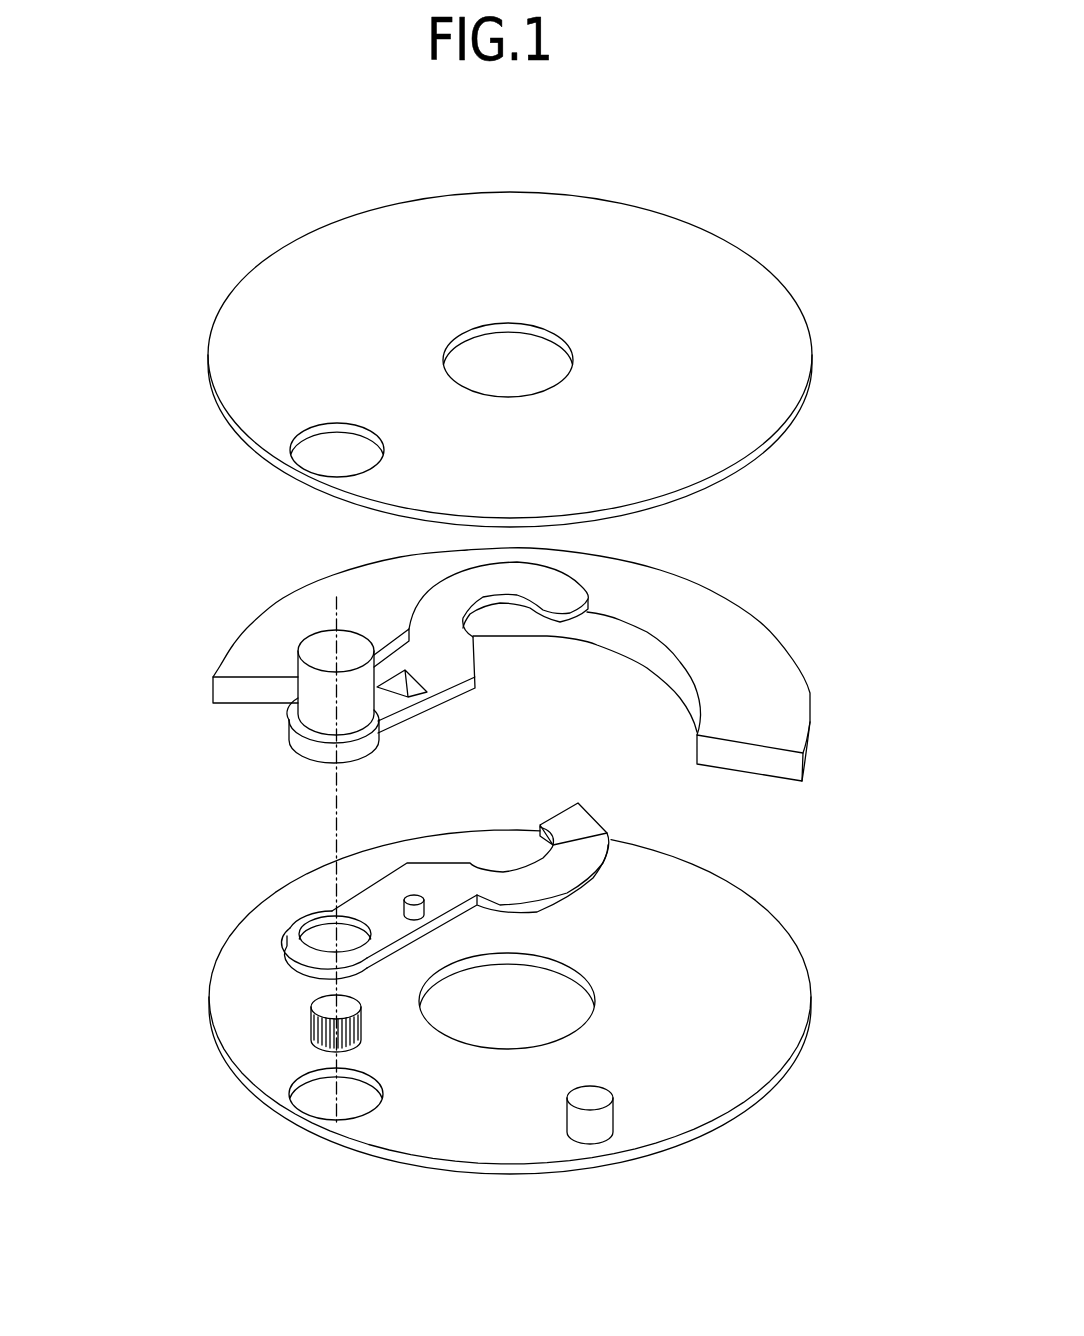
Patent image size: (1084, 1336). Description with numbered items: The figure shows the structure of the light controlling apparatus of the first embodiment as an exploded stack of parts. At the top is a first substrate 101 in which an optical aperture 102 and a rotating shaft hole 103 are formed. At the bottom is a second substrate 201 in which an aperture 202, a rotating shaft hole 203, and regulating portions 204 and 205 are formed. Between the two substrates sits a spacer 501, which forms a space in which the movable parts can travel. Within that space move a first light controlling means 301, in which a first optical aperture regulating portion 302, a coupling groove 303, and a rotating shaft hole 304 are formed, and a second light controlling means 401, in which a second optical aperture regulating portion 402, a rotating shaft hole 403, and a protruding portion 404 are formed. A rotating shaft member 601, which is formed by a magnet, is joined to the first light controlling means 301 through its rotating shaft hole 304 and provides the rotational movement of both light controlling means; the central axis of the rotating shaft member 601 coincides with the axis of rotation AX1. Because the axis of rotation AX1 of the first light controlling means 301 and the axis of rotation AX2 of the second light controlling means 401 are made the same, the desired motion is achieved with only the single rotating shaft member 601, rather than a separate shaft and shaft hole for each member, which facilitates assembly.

The first substrate 101 is at (748, 313).
The optical aperture 102 is at (565, 374).
The rotating shaft hole 103 is at (322, 472).
The second substrate 201 is at (715, 1055).
The aperture 202 is at (483, 1043).
The rotating shaft hole 203 is at (328, 1130).
The regulating portion 204 is at (597, 1097).
The regulating portion 205 is at (323, 1008).
The first light controlling means 301 is at (543, 582).
The first optical aperture regulating portion 302 is at (520, 620).
The coupling groove 303 is at (406, 670).
The rotating shaft hole 304 is at (297, 730).
The second light controlling means 401 is at (578, 822).
The second optical aperture regulating portion 402 is at (608, 841).
The rotating shaft hole 403 is at (322, 942).
The protruding portion 404 is at (410, 897).
The spacer 501 is at (723, 637).
The rotating shaft member 601 is at (320, 650).
The axis of rotation AX1 is at (337, 778).
The axis of rotation AX2 is at (336, 834).